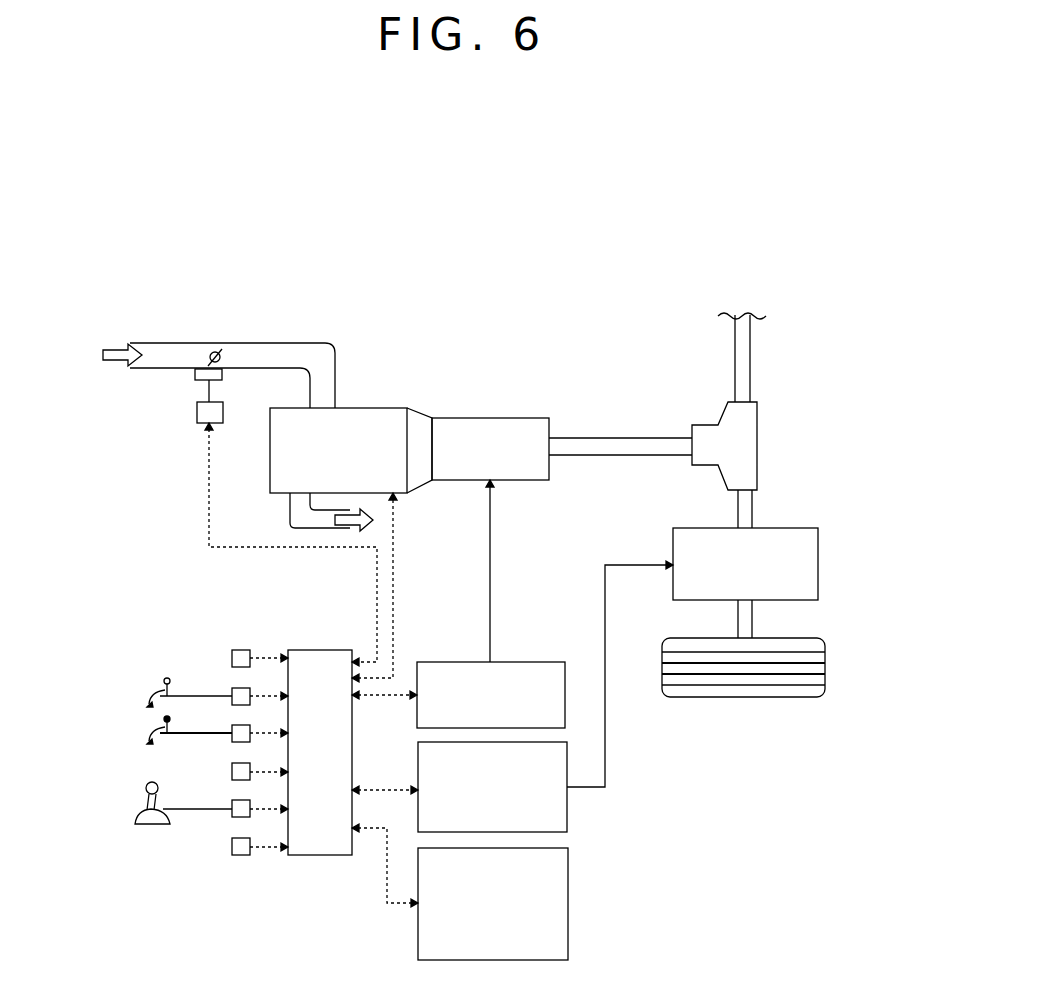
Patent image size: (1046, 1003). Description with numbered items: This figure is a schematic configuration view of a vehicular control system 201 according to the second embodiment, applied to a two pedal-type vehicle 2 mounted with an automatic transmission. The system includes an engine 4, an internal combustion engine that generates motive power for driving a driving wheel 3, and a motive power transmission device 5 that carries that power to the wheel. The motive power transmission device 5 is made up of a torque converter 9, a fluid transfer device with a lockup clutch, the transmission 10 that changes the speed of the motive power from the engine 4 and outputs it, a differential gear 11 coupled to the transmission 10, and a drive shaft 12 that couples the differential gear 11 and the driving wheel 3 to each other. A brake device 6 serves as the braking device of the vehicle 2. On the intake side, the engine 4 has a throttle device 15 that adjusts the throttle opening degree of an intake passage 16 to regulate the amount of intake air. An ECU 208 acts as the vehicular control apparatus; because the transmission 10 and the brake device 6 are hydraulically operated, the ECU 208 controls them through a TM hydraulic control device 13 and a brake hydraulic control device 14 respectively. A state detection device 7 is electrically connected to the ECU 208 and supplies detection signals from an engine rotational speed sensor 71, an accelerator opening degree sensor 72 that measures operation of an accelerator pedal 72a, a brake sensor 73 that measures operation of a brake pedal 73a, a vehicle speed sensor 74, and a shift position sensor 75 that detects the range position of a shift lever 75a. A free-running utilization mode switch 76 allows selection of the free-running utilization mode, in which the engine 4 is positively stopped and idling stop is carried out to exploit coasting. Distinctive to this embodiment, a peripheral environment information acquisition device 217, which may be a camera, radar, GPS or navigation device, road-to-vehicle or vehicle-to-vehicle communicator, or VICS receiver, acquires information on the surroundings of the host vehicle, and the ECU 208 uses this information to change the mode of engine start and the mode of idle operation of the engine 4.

The vehicle 2 is at (626, 270).
The driving wheel 3 is at (786, 697).
The engine 4 is at (371, 408).
The motive power transmission device 5 is at (595, 389).
The brake device 6 is at (791, 528).
The state detection device 7 is at (240, 639).
The torque converter 9 is at (423, 418).
The transmission 10 is at (524, 418).
The differential gear 11 is at (706, 432).
The drive shaft 12 is at (738, 509).
The TM hydraulic control device 13 is at (536, 662).
The brake hydraulic control device 14 is at (567, 819).
The throttle device 15 is at (223, 410).
The intake passage 16 is at (301, 343).
The vehicular control system 201 is at (157, 529).
The ECU 208 is at (322, 855).
The peripheral environment information acquisition device 217 is at (568, 947).
The engine rotational speed sensor 71 is at (232, 657).
The accelerator opening degree sensor 72 is at (232, 696).
The accelerator pedal 72a is at (164, 690).
The brake sensor 73 is at (232, 730).
The brake pedal 73a is at (164, 728).
The vehicle speed sensor 74 is at (232, 770).
The shift position sensor 75 is at (232, 808).
The shift lever 75a is at (150, 800).
The free-running utilization mode switch 76 is at (232, 846).